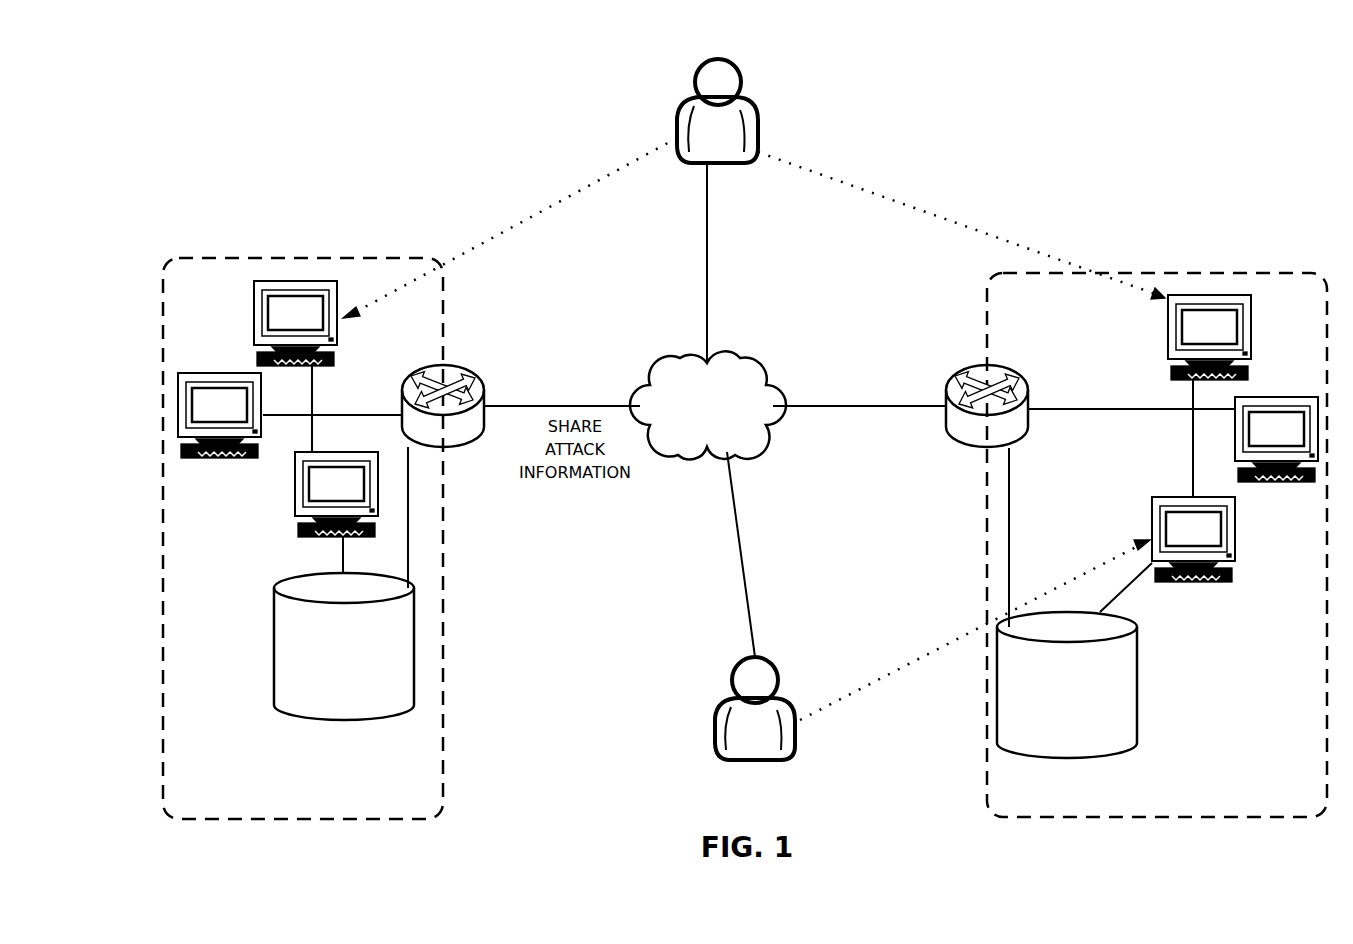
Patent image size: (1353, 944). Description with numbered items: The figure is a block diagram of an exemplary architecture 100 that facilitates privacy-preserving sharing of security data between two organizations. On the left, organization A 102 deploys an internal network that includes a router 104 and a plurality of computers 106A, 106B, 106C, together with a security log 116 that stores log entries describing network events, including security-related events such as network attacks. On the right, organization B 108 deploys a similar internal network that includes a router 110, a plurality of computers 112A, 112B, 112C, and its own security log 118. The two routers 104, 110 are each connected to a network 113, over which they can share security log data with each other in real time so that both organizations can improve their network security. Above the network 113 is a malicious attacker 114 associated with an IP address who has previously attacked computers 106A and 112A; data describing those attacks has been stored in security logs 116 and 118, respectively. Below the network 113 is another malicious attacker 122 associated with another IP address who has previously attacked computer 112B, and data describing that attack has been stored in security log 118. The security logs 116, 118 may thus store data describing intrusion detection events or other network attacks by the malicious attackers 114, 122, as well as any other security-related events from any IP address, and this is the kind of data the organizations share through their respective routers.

The architecture 100 is at (426, 88).
The organization A 102 is at (303, 538).
The router 104 is at (487, 385).
The computer 106A is at (318, 281).
The computer 106B is at (198, 373).
The computer 106C is at (378, 492).
The organization B 108 is at (1157, 545).
The router 110 is at (965, 378).
The computer 112A is at (1210, 295).
The computer 112B is at (1178, 497).
The computer 112C is at (1293, 397).
The network 113 is at (708, 405).
The malicious attacker 114 is at (758, 128).
The security log 116 is at (344, 646).
The security log 118 is at (1067, 685).
The malicious attacker 122 is at (720, 790).